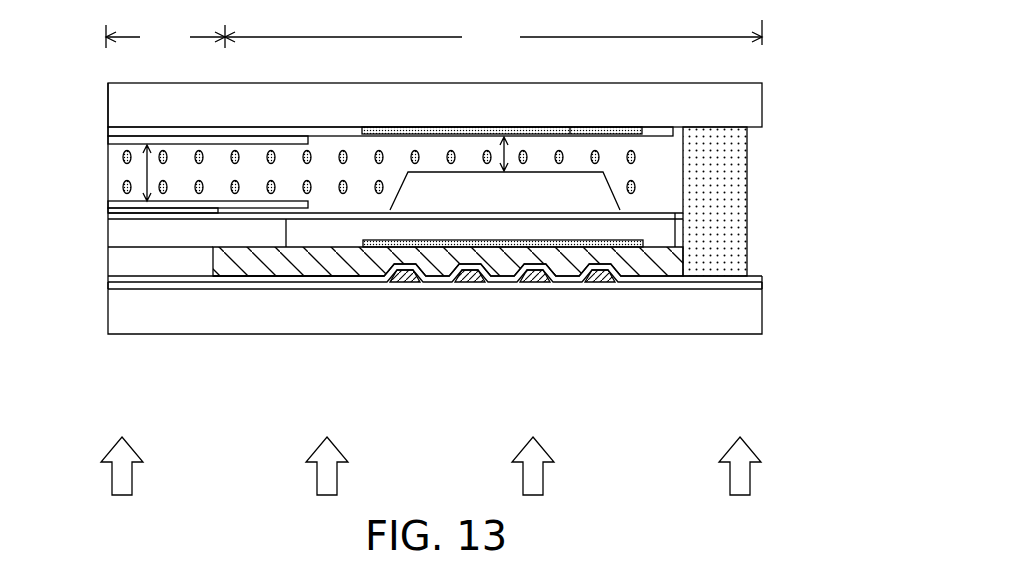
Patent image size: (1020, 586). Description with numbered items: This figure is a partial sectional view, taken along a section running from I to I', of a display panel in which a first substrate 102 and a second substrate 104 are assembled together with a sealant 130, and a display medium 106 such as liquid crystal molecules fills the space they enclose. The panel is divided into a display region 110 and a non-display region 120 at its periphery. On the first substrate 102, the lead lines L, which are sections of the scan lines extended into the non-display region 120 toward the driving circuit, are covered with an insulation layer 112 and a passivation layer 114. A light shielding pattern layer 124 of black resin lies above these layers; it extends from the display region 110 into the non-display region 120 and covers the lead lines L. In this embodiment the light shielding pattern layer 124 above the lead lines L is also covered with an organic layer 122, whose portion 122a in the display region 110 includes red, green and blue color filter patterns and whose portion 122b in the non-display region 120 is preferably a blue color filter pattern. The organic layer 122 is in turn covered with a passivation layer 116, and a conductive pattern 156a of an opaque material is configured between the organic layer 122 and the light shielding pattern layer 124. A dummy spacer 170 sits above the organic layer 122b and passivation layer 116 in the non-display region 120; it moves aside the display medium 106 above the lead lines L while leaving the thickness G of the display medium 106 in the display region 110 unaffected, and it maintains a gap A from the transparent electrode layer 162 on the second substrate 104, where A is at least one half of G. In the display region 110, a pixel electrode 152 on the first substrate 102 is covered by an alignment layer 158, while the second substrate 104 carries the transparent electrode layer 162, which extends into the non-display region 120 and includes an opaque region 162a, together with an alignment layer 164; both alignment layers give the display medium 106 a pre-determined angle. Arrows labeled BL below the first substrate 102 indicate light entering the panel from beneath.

The first substrate 102 is at (692, 317).
The second substrate 104 is at (745, 100).
The display medium 106 is at (123, 158).
The display region 110 is at (165, 36).
The non-display region 120 is at (493, 34).
The insulation layer 112 is at (762, 284).
The passivation layer 114 is at (755, 276).
The passivation layer 116 is at (117, 219).
The organic layer 122 is at (282, 390).
The organic layer 122a is at (188, 258).
The organic layer 122b is at (317, 233).
The light shielding pattern layer 124 is at (352, 267).
The sealant 130 is at (723, 177).
The pixel electrode 152 is at (117, 210).
The conductive pattern 156a is at (637, 242).
The alignment layer 158 is at (110, 203).
The transparent electrode layer 162 is at (255, 133).
The opaque region 162a is at (620, 128).
The alignment layer 164 is at (108, 142).
The dummy spacer 170 is at (572, 183).
The thickness G is at (149, 158).
The gap A is at (503, 147).
The lead lines L is at (600, 289).
The backlight BL is at (543, 480).
The section line end I is at (102, 356).
The section line end I' is at (763, 351).